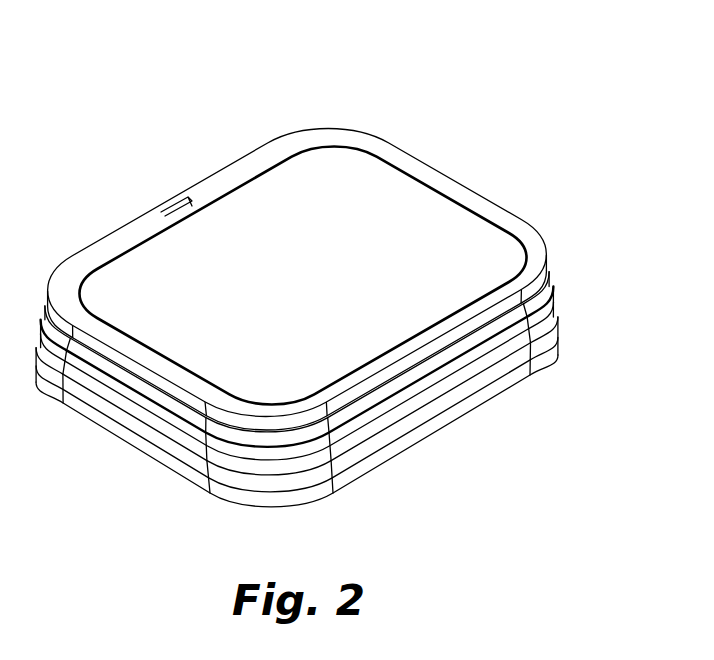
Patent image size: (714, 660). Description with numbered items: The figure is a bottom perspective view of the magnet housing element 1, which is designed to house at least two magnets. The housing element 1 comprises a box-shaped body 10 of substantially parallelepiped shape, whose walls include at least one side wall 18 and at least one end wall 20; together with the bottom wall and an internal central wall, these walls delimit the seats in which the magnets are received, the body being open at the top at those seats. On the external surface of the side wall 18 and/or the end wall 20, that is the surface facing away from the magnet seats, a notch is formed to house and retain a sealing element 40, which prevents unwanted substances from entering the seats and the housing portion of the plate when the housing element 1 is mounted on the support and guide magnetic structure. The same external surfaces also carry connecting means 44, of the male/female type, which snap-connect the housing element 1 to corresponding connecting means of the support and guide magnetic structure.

The housing element 1 is at (334, 286).
The box-shaped body 10 is at (334, 410).
The side wall 18 is at (118, 227).
The end wall 20 is at (297, 289).
The sealing element 40 is at (545, 300).
The connecting means 44 is at (542, 328).